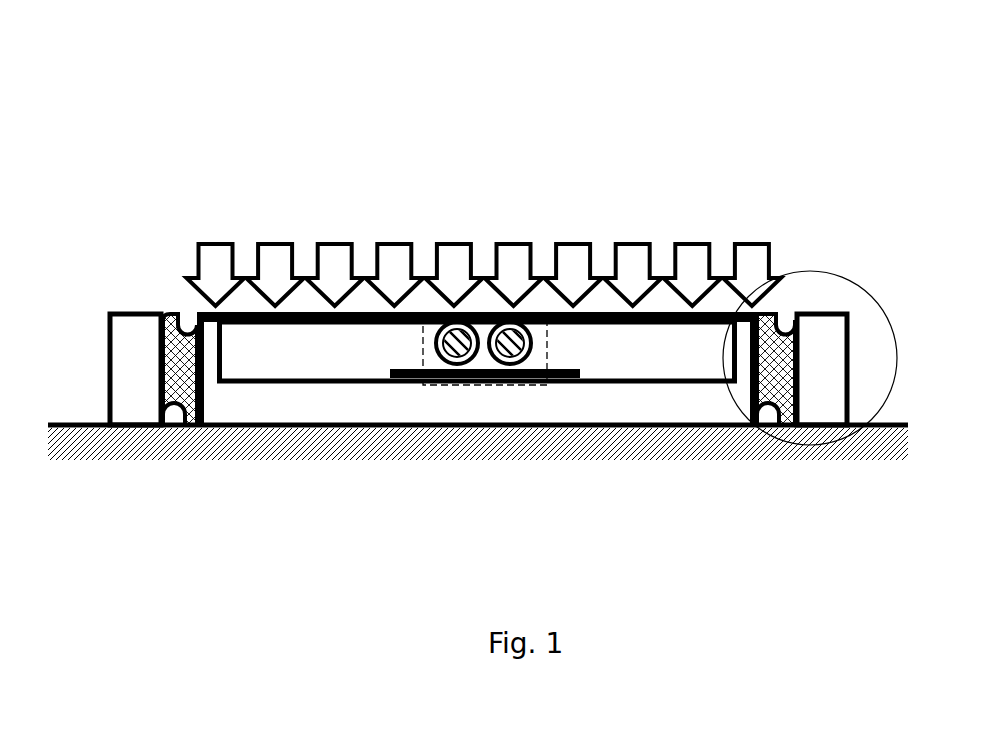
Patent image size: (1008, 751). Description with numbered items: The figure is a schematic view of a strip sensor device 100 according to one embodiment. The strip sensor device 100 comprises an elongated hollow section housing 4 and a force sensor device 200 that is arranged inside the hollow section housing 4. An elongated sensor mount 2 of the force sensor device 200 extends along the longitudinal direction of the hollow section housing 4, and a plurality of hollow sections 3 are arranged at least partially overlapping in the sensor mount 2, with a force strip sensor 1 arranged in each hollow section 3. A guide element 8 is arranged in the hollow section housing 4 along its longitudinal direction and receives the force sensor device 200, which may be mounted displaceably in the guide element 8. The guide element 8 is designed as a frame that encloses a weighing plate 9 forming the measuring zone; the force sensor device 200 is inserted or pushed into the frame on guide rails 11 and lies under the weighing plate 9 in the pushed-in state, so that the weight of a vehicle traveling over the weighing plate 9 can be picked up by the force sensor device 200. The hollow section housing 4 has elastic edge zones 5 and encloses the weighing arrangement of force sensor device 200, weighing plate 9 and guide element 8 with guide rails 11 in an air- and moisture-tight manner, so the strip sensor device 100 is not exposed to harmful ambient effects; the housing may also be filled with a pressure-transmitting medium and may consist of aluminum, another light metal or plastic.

The strip sensor device 100 is at (390, 96).
The hollow section housing 4 is at (196, 309).
The weighing plate 9 is at (590, 318).
The elastic edge zones 5 is at (812, 265).
The guide element 8 is at (307, 392).
The force strip sensor 1 is at (426, 388).
The sensor mount 2 is at (483, 384).
The hollow section 3 is at (536, 388).
The guide rails 11 is at (573, 384).
The force sensor device 200 is at (519, 394).